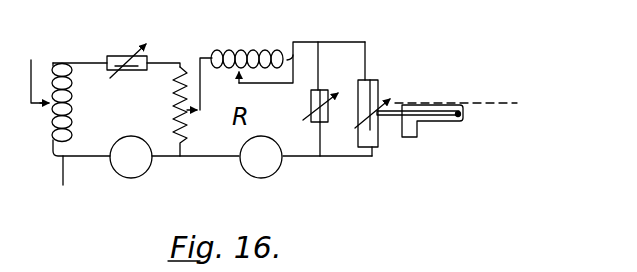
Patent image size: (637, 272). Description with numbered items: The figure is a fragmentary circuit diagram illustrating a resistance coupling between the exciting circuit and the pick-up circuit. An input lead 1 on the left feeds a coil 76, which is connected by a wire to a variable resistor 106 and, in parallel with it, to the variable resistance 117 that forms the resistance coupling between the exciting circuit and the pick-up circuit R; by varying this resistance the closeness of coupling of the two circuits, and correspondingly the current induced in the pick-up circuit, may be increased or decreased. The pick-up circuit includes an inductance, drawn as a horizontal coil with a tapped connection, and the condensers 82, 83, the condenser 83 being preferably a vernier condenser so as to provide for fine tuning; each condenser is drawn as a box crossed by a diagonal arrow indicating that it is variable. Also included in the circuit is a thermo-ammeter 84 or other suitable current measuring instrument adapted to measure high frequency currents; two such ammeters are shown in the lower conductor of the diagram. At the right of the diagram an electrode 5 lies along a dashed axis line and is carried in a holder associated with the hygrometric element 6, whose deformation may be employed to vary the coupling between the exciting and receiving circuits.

The input lead 1 is at (33, 108).
The coil 76 is at (68, 63).
The variable resistor 106 is at (128, 53).
The variable resistance 117 is at (168, 96).
The thermo-ammeter 84 is at (113, 167).
The condenser 83 is at (323, 88).
The condenser 82 is at (373, 80).
The electrode 5 is at (475, 100).
The hygrometric element 6 is at (437, 123).